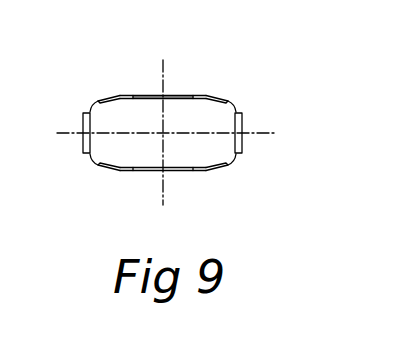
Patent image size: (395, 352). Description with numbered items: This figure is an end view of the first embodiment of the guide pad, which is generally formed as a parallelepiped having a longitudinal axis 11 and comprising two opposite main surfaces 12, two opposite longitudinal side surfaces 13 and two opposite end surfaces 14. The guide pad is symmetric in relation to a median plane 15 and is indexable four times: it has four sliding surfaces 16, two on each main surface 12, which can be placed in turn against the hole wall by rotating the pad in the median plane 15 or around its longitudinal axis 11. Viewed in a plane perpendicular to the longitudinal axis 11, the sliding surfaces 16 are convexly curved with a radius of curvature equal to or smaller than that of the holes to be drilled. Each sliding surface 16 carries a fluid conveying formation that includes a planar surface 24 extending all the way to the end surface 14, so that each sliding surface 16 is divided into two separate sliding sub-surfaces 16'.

The longitudinal axis 11 is at (162, 132).
The main surface 12 is at (148, 50).
The longitudinal side surface 13 is at (84, 126).
The end surface 14 is at (203, 127).
The median plane 15 is at (72, 134).
The sliding surface 16 is at (205, 128).
The sliding sub-surface 16' is at (163, 132).
The planar surface 24 is at (146, 93).